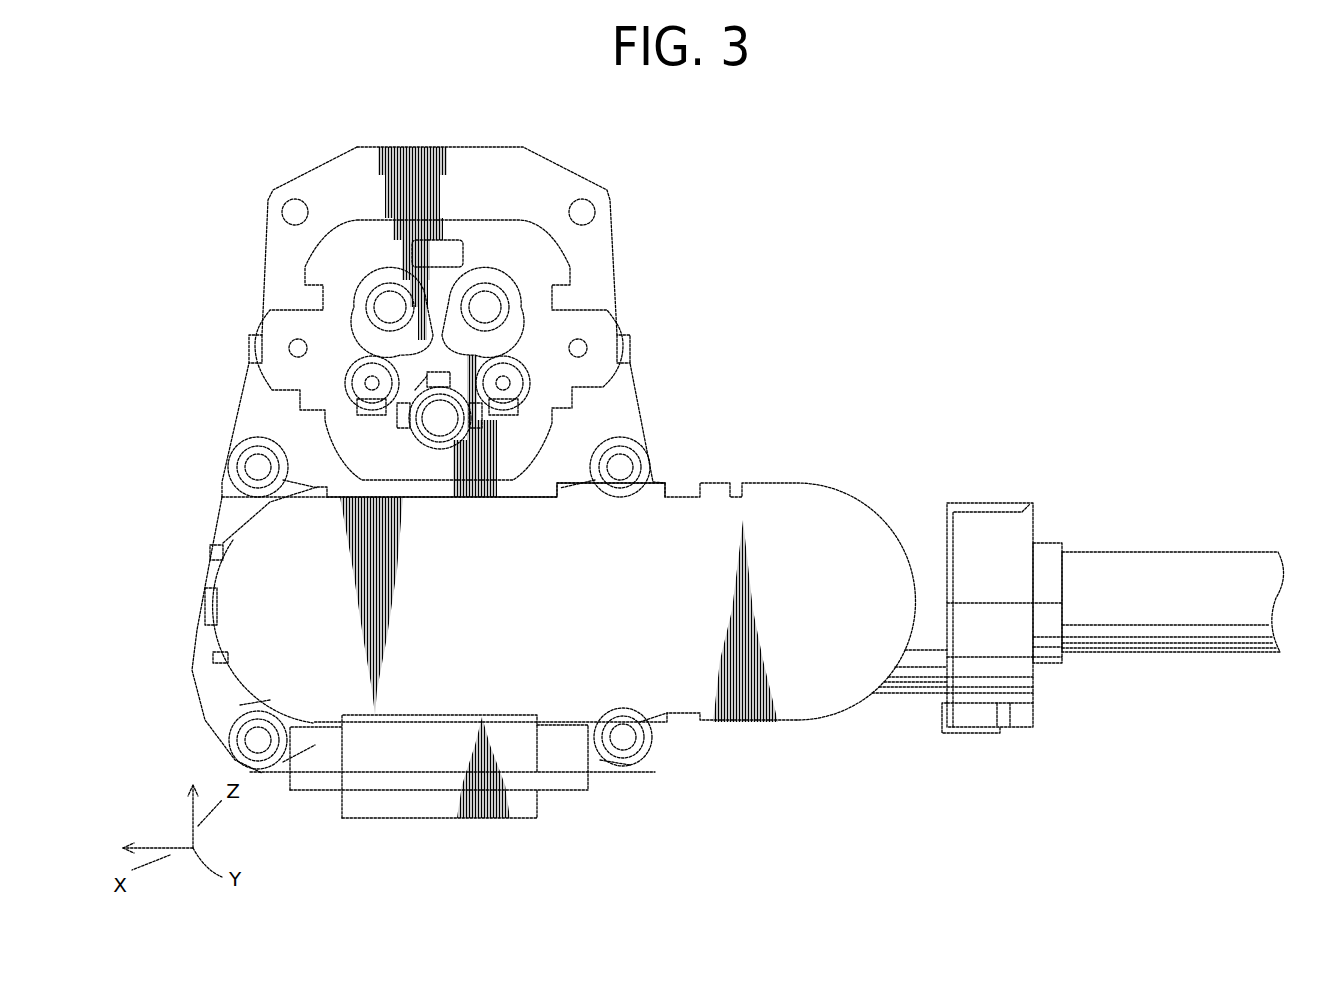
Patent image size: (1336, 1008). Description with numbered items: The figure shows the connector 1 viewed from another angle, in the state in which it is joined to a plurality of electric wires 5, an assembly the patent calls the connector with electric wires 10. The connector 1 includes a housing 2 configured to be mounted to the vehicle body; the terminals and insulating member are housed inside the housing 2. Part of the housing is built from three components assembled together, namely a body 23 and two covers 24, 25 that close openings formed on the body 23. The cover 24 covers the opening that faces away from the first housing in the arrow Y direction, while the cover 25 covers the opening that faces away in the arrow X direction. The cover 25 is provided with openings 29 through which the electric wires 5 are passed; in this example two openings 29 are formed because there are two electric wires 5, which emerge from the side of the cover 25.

The connector 1 is at (795, 483).
The housing 2 is at (795, 725).
The electric wires 5 is at (1230, 560).
The connector with electric wires 10 is at (909, 269).
The body 23 is at (924, 512).
The cover 24 is at (845, 515).
The cover 25 is at (1045, 541).
The openings 29 is at (1066, 582).